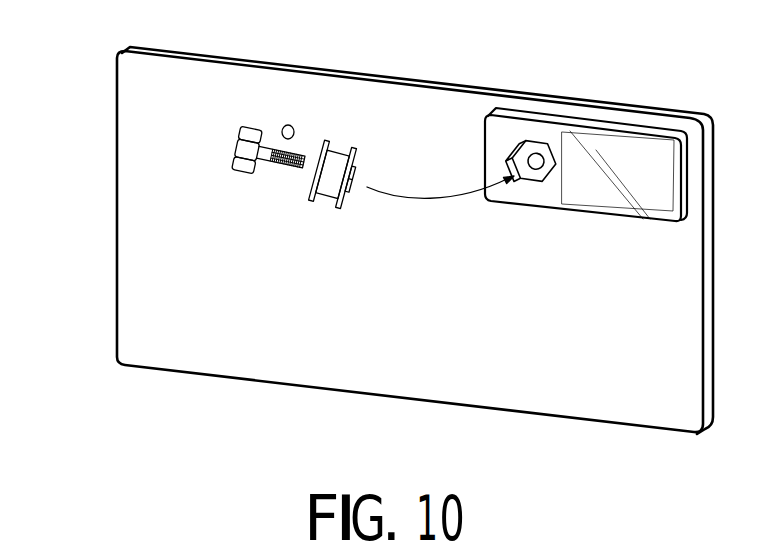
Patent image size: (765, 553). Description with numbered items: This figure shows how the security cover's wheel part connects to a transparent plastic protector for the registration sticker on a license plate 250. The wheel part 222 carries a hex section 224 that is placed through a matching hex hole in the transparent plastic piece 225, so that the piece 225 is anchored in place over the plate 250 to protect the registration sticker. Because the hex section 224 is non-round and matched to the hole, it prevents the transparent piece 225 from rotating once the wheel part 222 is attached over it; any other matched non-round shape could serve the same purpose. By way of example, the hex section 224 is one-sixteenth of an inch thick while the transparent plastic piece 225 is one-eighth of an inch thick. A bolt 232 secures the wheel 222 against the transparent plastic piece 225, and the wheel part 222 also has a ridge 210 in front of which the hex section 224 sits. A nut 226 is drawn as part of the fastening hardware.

The ridge 210 is at (395, 144).
The wheel part 222 is at (340, 130).
The hex section 224 is at (357, 168).
The transparent plastic piece 225 is at (585, 128).
The nut 226 is at (521, 143).
The bolt 232 is at (284, 169).
The license plate 250 is at (117, 152).